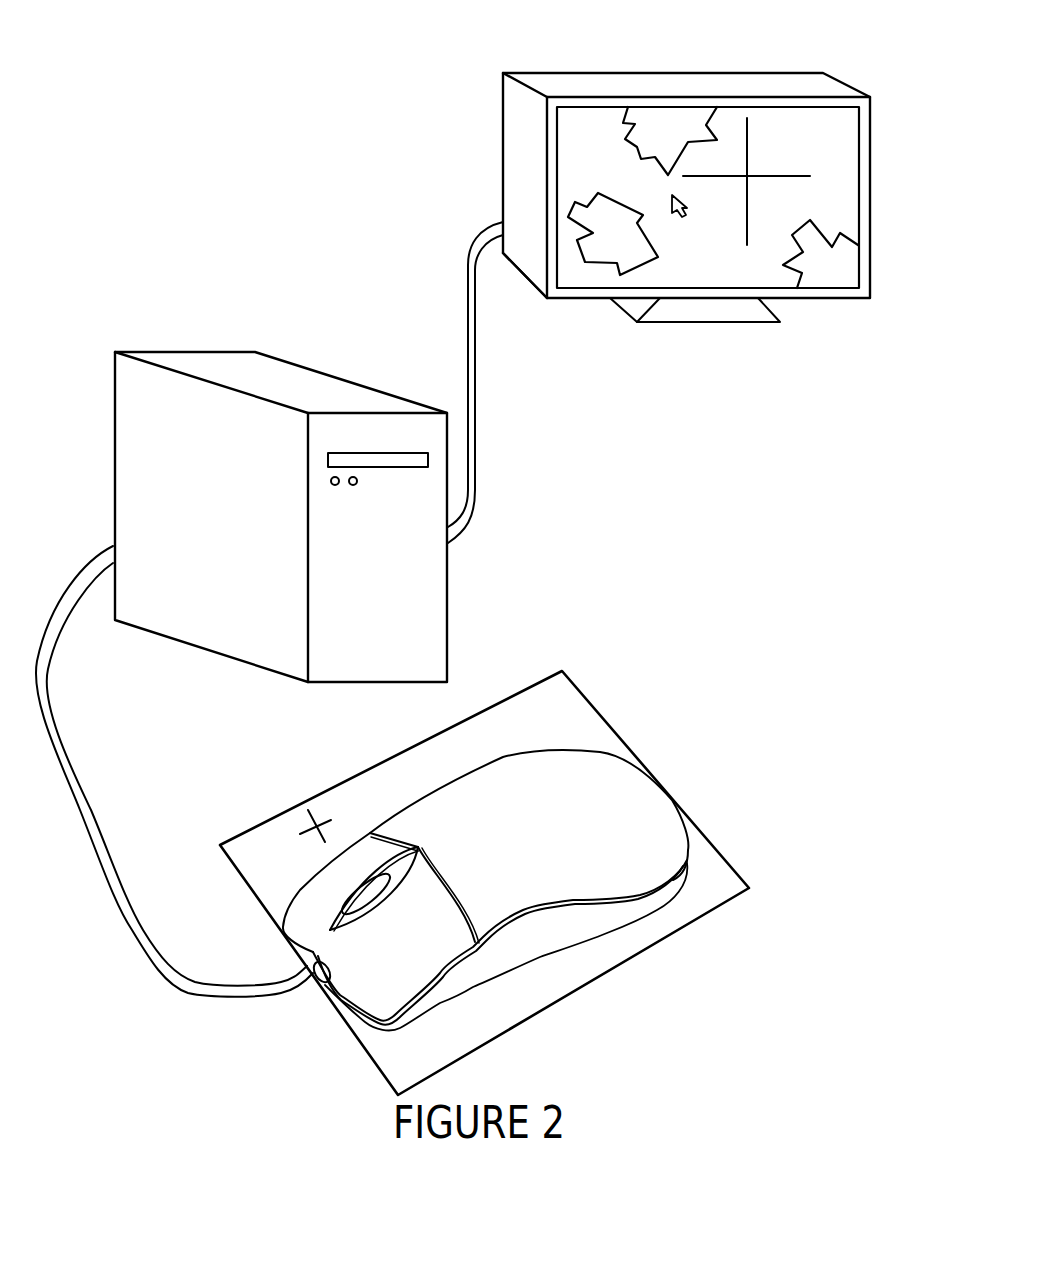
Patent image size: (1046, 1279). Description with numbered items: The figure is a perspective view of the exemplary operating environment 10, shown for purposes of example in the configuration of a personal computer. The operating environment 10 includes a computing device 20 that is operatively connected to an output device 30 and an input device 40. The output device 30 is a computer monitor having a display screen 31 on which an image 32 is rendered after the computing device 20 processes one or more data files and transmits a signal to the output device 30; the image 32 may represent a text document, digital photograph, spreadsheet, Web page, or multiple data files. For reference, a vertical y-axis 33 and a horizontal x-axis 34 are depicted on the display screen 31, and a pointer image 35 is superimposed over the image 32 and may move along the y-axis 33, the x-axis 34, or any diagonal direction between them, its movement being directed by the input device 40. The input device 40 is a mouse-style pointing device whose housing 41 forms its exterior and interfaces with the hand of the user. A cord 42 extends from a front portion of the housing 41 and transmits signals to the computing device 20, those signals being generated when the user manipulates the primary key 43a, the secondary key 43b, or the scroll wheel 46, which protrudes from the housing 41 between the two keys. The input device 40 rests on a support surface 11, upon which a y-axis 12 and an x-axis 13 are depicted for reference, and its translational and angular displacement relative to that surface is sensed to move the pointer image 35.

The operating environment 10 is at (786, 411).
The support surface 11 is at (607, 733).
The y-axis 12 is at (303, 830).
The x-axis 13 is at (310, 813).
The computing device 20 is at (448, 593).
The output device 30 is at (870, 266).
The display screen 31 is at (587, 278).
The image 32 is at (628, 148).
The y-axis 33 is at (750, 145).
The x-axis 34 is at (760, 178).
The pointer image 35 is at (689, 210).
The input device 40 is at (567, 753).
The housing 41 is at (558, 935).
The cord 42 is at (87, 797).
The primary key 43a is at (407, 987).
The secondary key 43b is at (310, 902).
The scroll wheel 46 is at (365, 898).